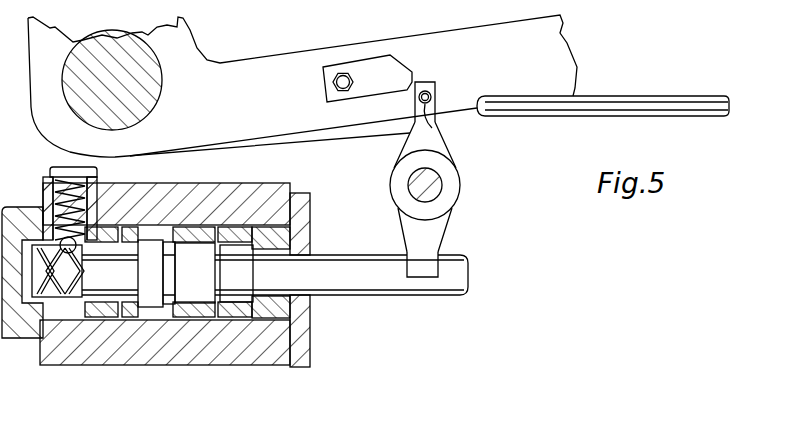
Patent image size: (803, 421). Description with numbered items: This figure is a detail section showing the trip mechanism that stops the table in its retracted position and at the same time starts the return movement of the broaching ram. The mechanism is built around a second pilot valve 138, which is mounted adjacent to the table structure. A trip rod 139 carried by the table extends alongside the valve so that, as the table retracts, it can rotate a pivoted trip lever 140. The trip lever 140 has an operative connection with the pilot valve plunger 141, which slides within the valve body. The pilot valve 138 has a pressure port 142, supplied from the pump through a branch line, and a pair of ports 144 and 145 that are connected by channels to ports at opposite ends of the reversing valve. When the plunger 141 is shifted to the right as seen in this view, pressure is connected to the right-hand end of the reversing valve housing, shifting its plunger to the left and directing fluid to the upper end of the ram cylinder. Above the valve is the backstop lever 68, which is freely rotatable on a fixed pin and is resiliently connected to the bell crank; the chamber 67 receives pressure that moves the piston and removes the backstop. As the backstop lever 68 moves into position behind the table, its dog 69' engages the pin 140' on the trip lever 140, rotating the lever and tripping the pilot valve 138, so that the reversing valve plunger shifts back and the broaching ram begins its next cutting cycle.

The chamber 67 is at (112, 44).
The backstop lever 68 is at (553, 43).
The dog 69' is at (367, 57).
The trip rod 139 is at (648, 103).
The trip lever 140 is at (447, 199).
The pin 140' is at (460, 115).
The pilot valve plunger 141 is at (385, 277).
The second pilot valve 138 is at (115, 360).
The pressure port 142 is at (177, 318).
The port 144 is at (152, 318).
The port 145 is at (200, 323).